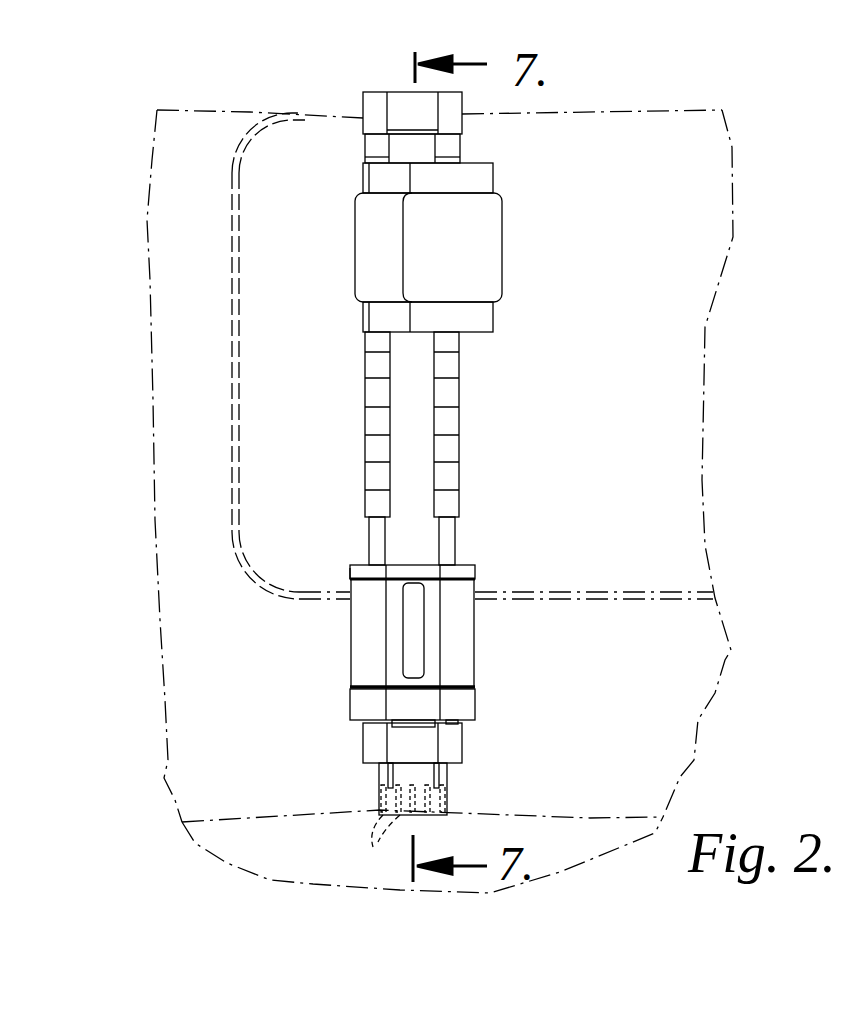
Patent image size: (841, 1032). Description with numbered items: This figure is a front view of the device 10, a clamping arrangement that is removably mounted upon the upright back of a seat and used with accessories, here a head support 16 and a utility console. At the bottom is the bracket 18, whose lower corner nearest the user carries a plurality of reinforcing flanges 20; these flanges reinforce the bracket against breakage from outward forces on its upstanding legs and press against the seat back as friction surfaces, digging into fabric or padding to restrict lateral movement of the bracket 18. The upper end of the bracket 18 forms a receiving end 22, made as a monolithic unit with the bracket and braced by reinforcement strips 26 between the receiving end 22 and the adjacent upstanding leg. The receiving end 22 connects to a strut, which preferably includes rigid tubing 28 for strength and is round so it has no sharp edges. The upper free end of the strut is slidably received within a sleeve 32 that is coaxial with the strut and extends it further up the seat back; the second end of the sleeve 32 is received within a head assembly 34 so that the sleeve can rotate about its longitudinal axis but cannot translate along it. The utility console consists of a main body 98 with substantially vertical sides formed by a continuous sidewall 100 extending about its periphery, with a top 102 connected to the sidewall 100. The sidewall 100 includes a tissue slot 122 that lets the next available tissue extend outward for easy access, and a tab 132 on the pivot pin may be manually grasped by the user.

The device 10 is at (530, 344).
The head support 16 is at (502, 249).
The bracket 18 is at (432, 815).
The reinforcing flanges 20 is at (376, 846).
The receiving end 22 is at (462, 752).
The reinforcement strips 26 is at (439, 772).
The rigid tubing 28 is at (455, 540).
The sleeve 32 is at (459, 398).
The head assembly 34 is at (462, 126).
The main body 98 is at (475, 572).
The sidewall 100 is at (474, 628).
The top 102 is at (350, 567).
The tissue slot 122 is at (403, 628).
The tab 132 is at (455, 724).